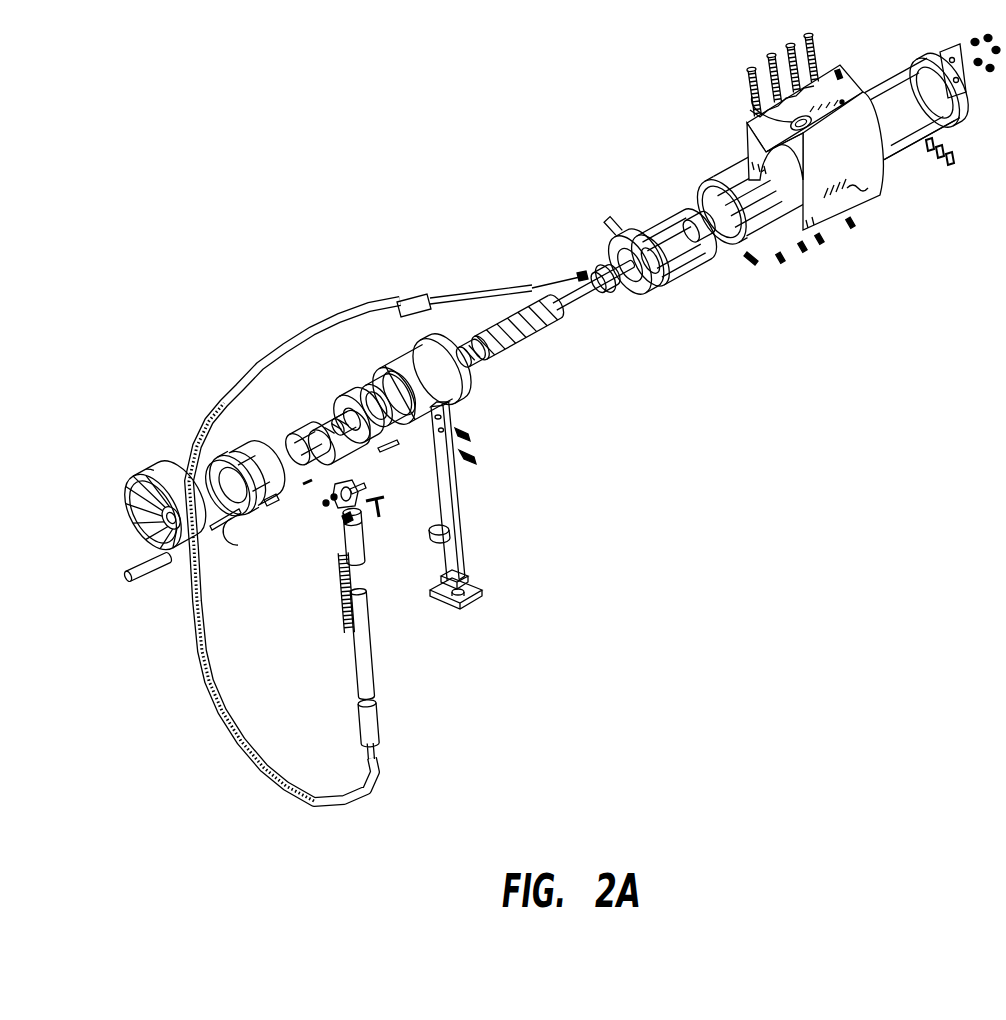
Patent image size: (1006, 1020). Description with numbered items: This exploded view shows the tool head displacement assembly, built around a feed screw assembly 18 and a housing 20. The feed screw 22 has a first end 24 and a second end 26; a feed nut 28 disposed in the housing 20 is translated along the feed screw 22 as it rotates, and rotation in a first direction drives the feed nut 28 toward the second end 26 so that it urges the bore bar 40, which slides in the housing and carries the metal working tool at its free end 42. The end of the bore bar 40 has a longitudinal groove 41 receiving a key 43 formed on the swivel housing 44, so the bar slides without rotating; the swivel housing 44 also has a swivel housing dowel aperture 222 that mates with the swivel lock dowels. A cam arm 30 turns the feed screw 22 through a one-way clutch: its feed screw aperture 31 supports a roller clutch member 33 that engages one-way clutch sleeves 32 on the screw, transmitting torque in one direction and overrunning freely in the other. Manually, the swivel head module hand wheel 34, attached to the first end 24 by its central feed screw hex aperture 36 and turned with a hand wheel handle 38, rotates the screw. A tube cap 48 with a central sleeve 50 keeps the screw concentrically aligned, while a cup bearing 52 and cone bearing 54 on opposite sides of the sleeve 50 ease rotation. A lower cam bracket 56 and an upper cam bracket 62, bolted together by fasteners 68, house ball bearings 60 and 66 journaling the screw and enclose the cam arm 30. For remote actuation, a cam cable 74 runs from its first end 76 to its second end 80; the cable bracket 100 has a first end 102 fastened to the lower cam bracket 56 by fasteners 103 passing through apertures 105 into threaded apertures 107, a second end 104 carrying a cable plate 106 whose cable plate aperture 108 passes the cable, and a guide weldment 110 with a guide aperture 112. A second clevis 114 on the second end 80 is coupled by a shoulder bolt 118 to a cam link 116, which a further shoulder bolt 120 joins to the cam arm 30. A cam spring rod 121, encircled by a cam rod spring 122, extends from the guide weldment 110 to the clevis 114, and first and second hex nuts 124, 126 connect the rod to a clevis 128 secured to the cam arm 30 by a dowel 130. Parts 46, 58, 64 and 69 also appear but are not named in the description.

The feed screw assembly 18 is at (523, 341).
The housing 20 is at (843, 228).
The feed screw 22 is at (572, 307).
The first end 24 is at (470, 343).
The second end 26 is at (733, 190).
The feed nut 28 is at (697, 225).
The cam arm 30 is at (322, 425).
The feed screw aperture 31 is at (295, 442).
The one-way clutch sleeves 32 is at (517, 342).
The roller clutch member 33 is at (345, 405).
The swivel head module hand wheel 34 is at (160, 480).
The central feed screw hex aperture 36 is at (162, 516).
The hand wheel handle 38 is at (130, 574).
The bore bar 40 is at (893, 84).
The fastener 41 is at (765, 212).
The free end 42 is at (926, 55).
The key 43 is at (800, 210).
The swivel housing 44 is at (861, 176).
The motor housing 46 is at (752, 176).
The tube cap 48 is at (672, 292).
The central sleeve 50 is at (614, 256).
The cup bearing 52 is at (699, 252).
The cone bearing 54 is at (614, 296).
The lower cam bracket 56 is at (405, 345).
The cable core 58 is at (368, 315).
The ball bearing 60 is at (360, 392).
The upper cam bracket 62 is at (236, 462).
The pin 64 is at (237, 517).
The ball bearing 66 is at (272, 500).
The fasteners 68 is at (228, 478).
The washer 69 is at (240, 455).
The cam cable 74 is at (245, 372).
The first end 76 is at (578, 276).
The second end 80 is at (364, 608).
The cable bracket 100 is at (455, 502).
The first end 102 is at (441, 418).
The fasteners 103 is at (472, 434).
The second end 104 is at (468, 579).
The apertures 105 is at (447, 415).
The cable plate 106 is at (461, 604).
The threaded apertures 107 is at (430, 360).
The cable plate aperture 108 is at (452, 607).
The guide weldment 110 is at (430, 535).
The guide aperture 112 is at (379, 505).
The second clevis 114 is at (360, 560).
The cam link 116 is at (376, 480).
The shoulder bolt 118 is at (377, 517).
The shoulder bolt 120 is at (377, 451).
The cam spring rod 121 is at (352, 678).
The cam rod spring 122 is at (340, 585).
The first hex nut 124 is at (345, 524).
The second hex nut 126 is at (330, 510).
The clevis 128 is at (336, 488).
The dowel 130 is at (306, 488).
The swivel housing dowel aperture 222 is at (760, 128).